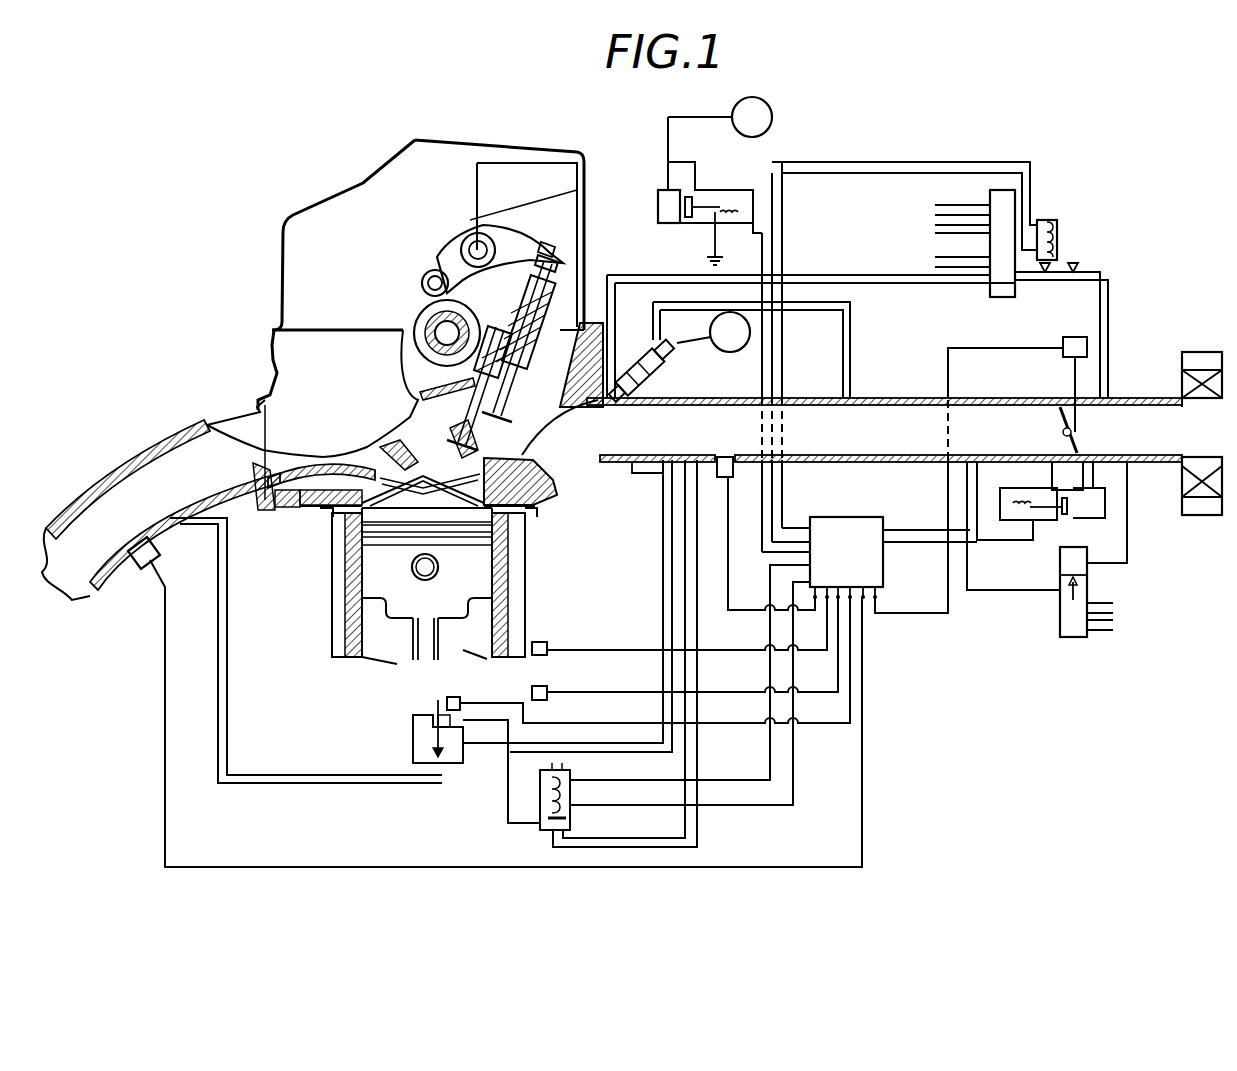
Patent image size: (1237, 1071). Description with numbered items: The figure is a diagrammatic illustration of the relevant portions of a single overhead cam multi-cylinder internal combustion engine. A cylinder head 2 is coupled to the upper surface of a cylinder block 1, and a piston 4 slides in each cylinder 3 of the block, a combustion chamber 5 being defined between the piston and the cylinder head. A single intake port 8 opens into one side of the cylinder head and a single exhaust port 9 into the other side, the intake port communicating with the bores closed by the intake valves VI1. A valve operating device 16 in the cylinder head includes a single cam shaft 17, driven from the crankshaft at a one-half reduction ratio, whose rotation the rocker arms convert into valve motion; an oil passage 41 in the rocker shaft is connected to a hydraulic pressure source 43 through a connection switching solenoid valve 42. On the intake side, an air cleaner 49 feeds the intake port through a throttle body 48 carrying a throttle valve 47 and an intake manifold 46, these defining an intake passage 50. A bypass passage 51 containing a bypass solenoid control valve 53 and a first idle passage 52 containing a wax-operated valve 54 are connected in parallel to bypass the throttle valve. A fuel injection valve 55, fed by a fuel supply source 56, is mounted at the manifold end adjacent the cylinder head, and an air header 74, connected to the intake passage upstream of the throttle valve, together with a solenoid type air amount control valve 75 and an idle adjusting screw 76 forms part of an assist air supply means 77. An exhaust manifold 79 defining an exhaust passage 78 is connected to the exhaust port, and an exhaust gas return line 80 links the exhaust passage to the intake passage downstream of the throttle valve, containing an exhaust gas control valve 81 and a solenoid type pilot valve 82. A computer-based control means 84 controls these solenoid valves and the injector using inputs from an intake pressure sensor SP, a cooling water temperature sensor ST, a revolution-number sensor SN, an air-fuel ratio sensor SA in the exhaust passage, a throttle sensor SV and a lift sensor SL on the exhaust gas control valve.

The cylinder block 1 is at (528, 590).
The cylinder head 2 is at (282, 364).
The cylinder 3 is at (363, 660).
The piston 4 is at (373, 565).
The combustion chamber 5 is at (427, 490).
The intake port 8 is at (580, 450).
The exhaust port 9 is at (278, 462).
The valve operating device 16 is at (578, 275).
The cam shaft 17 is at (430, 320).
The oil passage 41 is at (478, 250).
The connection switching solenoid valve 42 is at (657, 200).
The hydraulic pressure source 43 is at (773, 118).
The intake manifold 46 is at (733, 390).
The throttle valve 47 is at (1080, 446).
The throttle body 48 is at (1050, 400).
The air cleaner 49 is at (1198, 351).
The intake passage 50 is at (912, 450).
The bypass passage 51 is at (1047, 472).
The first idle passage 52 is at (1013, 590).
The bypass solenoid control valve 53 is at (1055, 520).
The wax-operated valve 54 is at (1073, 637).
The fuel injection valve 55 is at (642, 348).
The fuel supply source 56 is at (722, 343).
The air header 74 is at (1005, 297).
The solenoid type air amount control valve 75 is at (1052, 218).
The idle adjusting screw 76 is at (1075, 262).
The assist air supply means 77 is at (675, 266).
The exhaust passage 78 is at (168, 501).
The exhaust manifold 79 is at (163, 441).
The exhaust gas return line 80 is at (320, 780).
The exhaust gas control valve 81 is at (413, 742).
The solenoid type pilot valve 82 is at (572, 820).
The control means 84 is at (858, 565).
The air-fuel ratio sensor SA is at (143, 572).
The lift sensor SL is at (455, 697).
The revolution-number sensor SN is at (548, 692).
The intake pressure sensor SP is at (716, 458).
The engine cooling water temperature sensor ST is at (542, 642).
The throttle sensor SV is at (1075, 337).
The intake valve VI1 is at (591, 540).